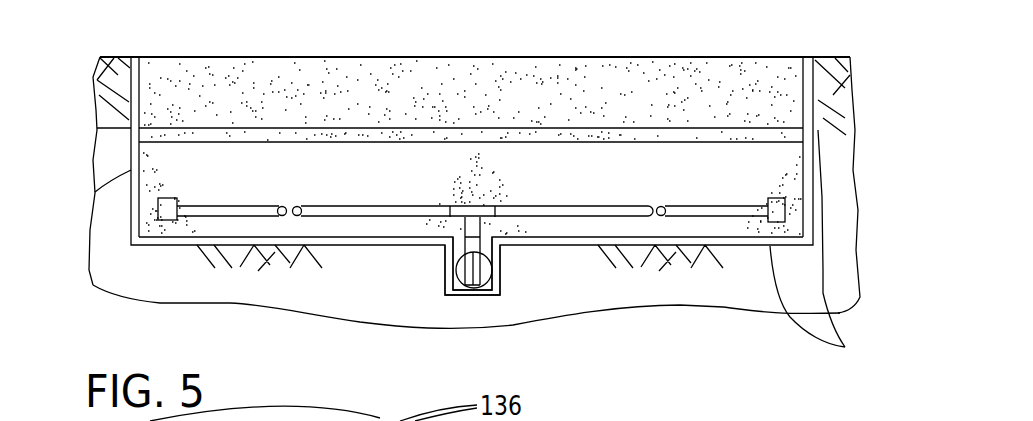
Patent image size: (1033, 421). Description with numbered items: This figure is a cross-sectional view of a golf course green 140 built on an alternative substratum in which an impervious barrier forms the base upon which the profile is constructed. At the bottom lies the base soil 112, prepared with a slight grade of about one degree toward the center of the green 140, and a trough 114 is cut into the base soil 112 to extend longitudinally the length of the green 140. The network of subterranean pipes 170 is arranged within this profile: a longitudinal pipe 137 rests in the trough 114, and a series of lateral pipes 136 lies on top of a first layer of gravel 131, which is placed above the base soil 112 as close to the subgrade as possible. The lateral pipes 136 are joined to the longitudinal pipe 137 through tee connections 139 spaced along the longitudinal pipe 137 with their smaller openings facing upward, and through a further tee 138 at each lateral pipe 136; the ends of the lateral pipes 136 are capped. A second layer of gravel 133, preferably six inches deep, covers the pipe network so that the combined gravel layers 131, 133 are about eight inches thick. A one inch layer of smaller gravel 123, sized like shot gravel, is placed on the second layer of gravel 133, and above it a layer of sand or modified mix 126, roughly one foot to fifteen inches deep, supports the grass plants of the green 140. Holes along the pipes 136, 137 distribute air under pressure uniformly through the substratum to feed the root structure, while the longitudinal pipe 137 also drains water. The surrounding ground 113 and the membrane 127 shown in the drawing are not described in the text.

The base soil 112 is at (757, 386).
The ground 113 is at (95, 193).
The trough 114 is at (499, 288).
The layer of smaller gravel 123 is at (709, 137).
The layer of sand or modified mix 126 is at (307, 80).
The intermediate layer 127 is at (307, 137).
The first layer of gravel 131 is at (343, 228).
The second layer of gravel 133 is at (392, 186).
The lateral pipes 136 is at (265, 212).
The longitudinal pipe 137 is at (472, 285).
The tee 138 is at (470, 210).
The tee connection 139 is at (488, 254).
The green 140 is at (480, 57).
The network of subterranean pipes 170 is at (205, 214).